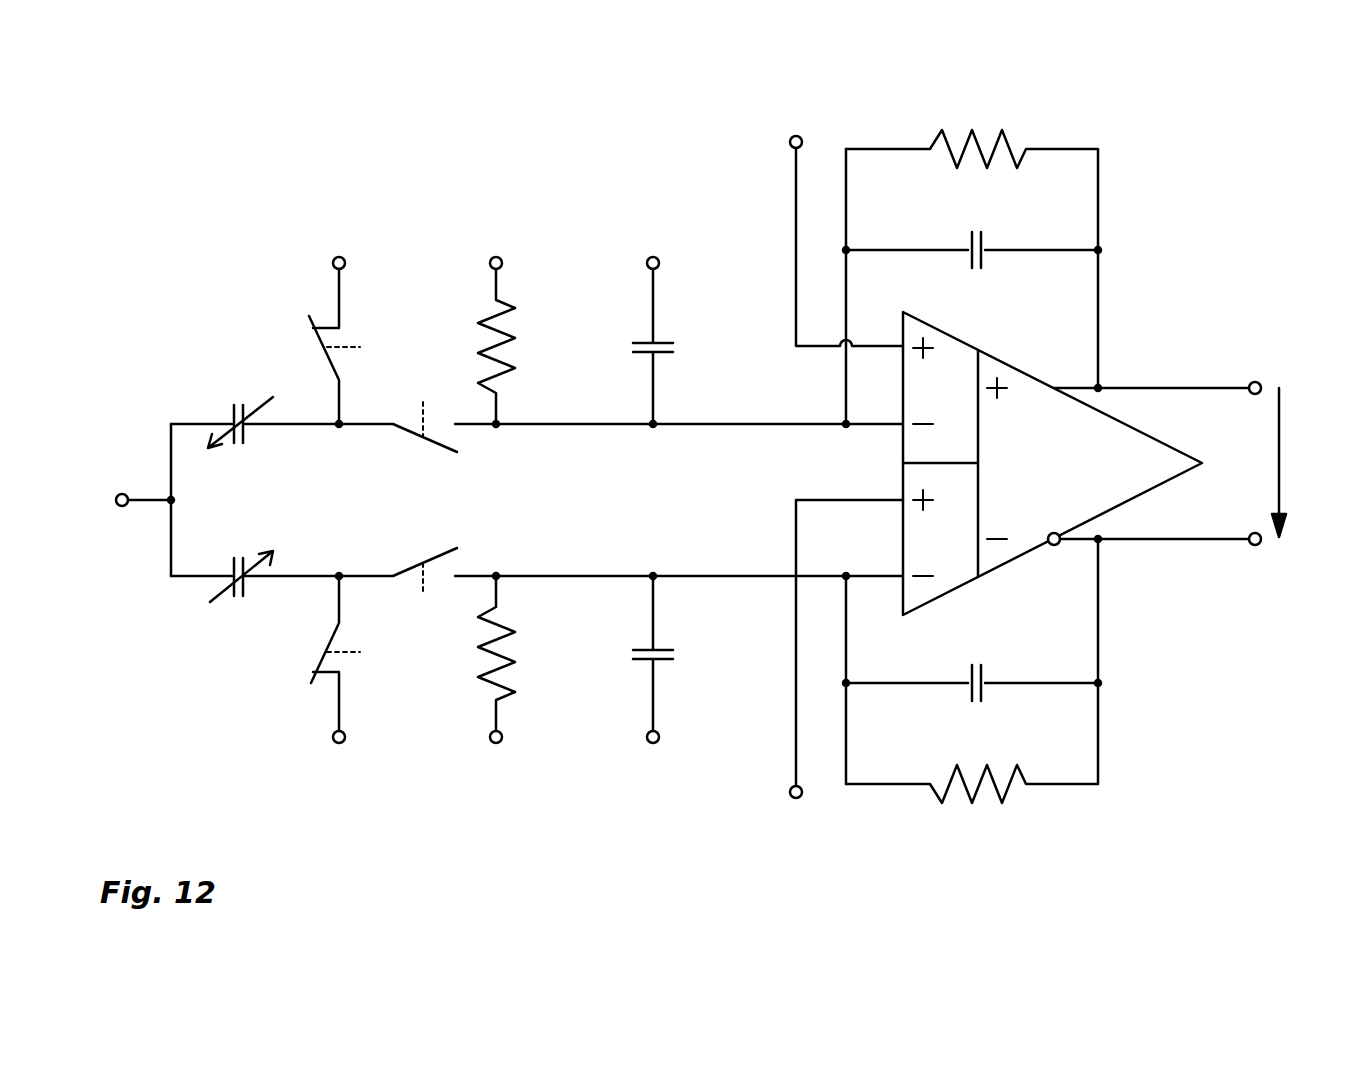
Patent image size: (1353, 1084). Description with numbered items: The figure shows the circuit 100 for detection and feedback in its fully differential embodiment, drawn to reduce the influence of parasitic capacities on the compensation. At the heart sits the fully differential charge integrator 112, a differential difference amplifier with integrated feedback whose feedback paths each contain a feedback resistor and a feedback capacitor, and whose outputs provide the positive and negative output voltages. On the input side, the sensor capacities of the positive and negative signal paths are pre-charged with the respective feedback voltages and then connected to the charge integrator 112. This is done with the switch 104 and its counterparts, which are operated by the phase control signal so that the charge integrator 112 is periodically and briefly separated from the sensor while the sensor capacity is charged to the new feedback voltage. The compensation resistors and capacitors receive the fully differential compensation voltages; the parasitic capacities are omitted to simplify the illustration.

The circuit 100 is at (697, 497).
The switch 104 is at (317, 653).
The fully differential charge integrator 112 is at (1127, 505).